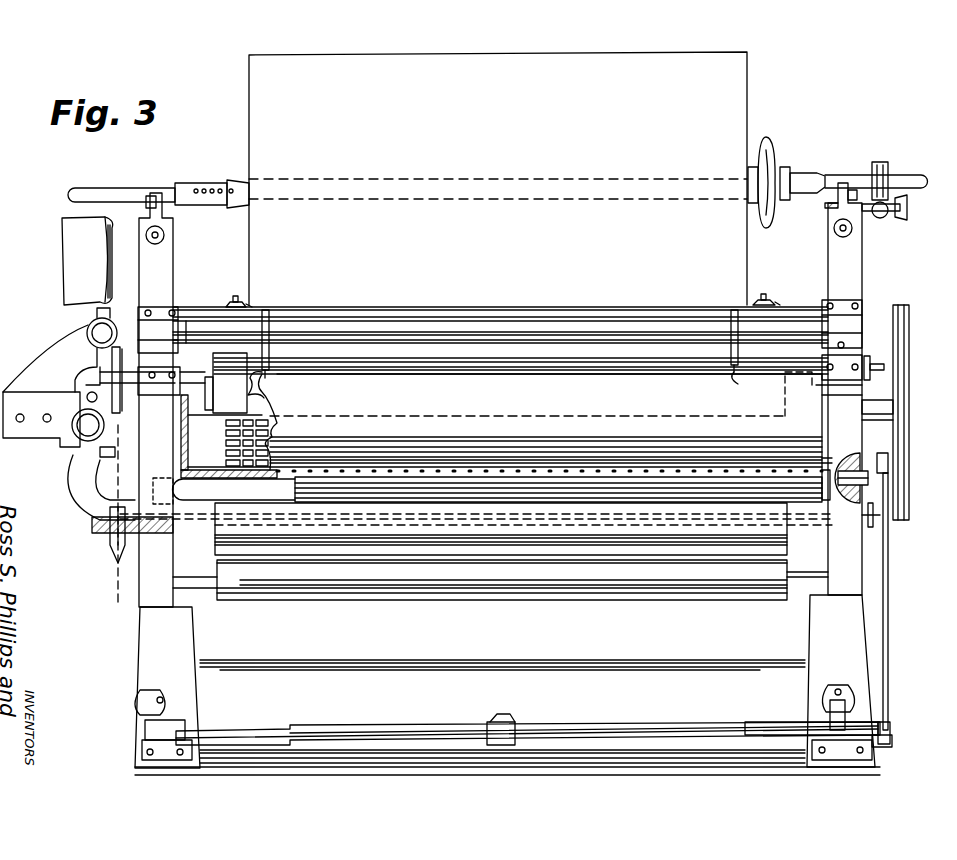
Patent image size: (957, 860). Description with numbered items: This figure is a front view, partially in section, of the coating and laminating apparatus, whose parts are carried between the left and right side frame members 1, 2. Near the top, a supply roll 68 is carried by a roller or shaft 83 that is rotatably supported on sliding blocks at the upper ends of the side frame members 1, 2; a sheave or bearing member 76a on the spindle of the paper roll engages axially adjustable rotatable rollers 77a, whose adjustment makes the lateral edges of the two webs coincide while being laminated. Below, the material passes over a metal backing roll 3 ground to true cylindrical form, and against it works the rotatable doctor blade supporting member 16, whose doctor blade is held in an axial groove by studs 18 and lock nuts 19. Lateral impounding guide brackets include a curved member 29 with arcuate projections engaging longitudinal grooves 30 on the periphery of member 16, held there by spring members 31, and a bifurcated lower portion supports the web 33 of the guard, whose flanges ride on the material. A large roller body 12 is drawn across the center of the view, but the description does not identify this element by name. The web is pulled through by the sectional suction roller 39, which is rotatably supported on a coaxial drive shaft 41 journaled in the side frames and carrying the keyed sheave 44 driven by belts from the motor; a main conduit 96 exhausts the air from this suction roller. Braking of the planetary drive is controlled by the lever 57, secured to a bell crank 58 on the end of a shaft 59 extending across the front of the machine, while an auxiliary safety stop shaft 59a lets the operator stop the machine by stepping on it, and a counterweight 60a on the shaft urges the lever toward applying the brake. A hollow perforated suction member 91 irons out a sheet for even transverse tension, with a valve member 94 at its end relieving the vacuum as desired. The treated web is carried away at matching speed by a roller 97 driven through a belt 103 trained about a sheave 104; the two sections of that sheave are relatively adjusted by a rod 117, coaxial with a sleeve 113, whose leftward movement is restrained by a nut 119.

The side frame member 1 is at (148, 575).
The side frame member 2 is at (848, 548).
The backing roll 3 is at (246, 410).
The printing roller 12 is at (546, 421).
The rotatable doctor blade supporting member 16 is at (200, 330).
The studs 18 is at (234, 303).
The lock nuts 19 is at (242, 306).
The curved member 29 is at (266, 330).
The longitudinal grooves 30 is at (215, 318).
The spring members 31 is at (190, 335).
The web of the guard member 33 is at (262, 378).
The suction roller 39 is at (188, 460).
The drive shaft 41 is at (880, 408).
The sheave 44 is at (902, 368).
The lever 57 is at (890, 619).
The bell crank 58 is at (894, 732).
The shaft 59 is at (345, 728).
The shaft 59a is at (780, 732).
The counterweight 60a is at (495, 720).
The roll 68 is at (250, 112).
The sheave or bearing member 76a is at (880, 162).
The axially adjustable rotatable rollers 77a is at (884, 220).
The roller or shaft 83 is at (122, 187).
The suction member 91 is at (620, 482).
The valve member 94 is at (836, 497).
The main conduit 96 is at (68, 258).
The roller 97 is at (235, 535).
The belt 103 is at (82, 448).
The sheave 104 is at (113, 376).
The sleeve 113 is at (200, 377).
The rod 117 is at (884, 364).
The nut 119 is at (868, 356).